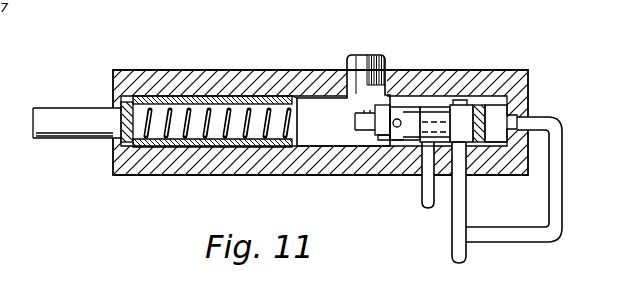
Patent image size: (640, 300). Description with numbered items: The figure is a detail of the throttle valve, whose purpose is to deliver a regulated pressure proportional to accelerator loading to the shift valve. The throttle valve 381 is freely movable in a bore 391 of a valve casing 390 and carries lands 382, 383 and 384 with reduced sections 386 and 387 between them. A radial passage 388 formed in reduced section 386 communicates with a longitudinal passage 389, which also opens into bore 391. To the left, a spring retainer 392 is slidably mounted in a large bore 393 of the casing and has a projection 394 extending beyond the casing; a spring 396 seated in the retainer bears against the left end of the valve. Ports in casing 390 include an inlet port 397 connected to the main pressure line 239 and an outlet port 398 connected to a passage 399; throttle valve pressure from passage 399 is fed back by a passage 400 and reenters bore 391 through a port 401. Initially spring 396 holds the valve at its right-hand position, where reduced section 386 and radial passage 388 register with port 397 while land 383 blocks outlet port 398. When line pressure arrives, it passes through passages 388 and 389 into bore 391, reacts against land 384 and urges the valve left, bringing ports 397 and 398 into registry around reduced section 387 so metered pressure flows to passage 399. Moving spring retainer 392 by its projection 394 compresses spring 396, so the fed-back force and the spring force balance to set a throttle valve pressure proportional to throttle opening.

The valve casing 390 is at (222, 176).
The projection 394 is at (84, 120).
The spring 396 is at (228, 108).
The spring retainer 392 is at (166, 96).
The large bore 393 is at (313, 100).
The land 382 is at (384, 143).
The radial passage 388 is at (393, 107).
The land 383 is at (413, 108).
The reduced section 387 is at (440, 115).
The throttle valve 381 is at (462, 112).
The longitudinal passage 389 is at (480, 112).
The bore 391 is at (502, 112).
The port 401 is at (516, 122).
The passage 400 is at (545, 236).
The passage 399 is at (452, 252).
The main pressure line 239 is at (431, 195).
The inlet port 397 is at (426, 192).
The reduced section 386 is at (393, 142).
The outlet port 398 is at (460, 146).
The land 384 is at (492, 142).